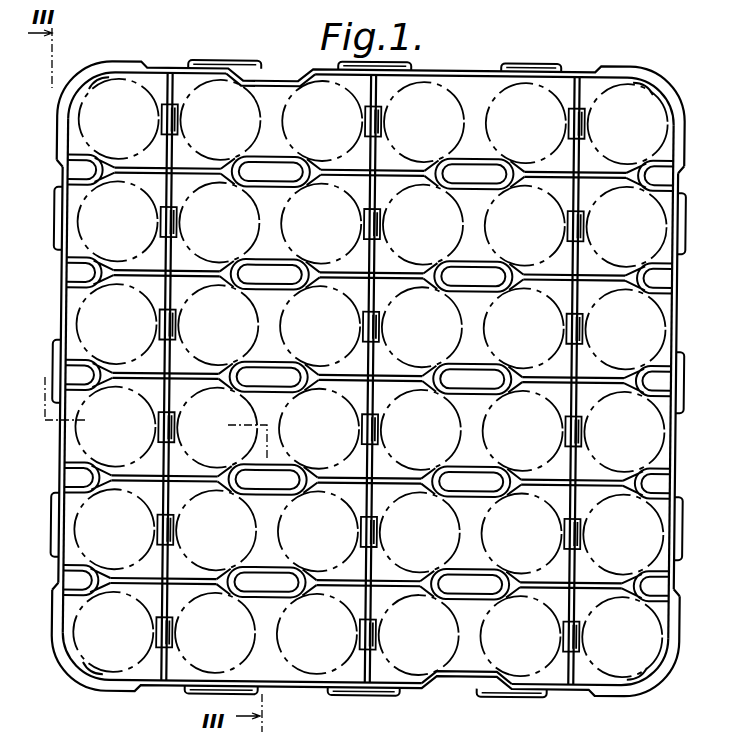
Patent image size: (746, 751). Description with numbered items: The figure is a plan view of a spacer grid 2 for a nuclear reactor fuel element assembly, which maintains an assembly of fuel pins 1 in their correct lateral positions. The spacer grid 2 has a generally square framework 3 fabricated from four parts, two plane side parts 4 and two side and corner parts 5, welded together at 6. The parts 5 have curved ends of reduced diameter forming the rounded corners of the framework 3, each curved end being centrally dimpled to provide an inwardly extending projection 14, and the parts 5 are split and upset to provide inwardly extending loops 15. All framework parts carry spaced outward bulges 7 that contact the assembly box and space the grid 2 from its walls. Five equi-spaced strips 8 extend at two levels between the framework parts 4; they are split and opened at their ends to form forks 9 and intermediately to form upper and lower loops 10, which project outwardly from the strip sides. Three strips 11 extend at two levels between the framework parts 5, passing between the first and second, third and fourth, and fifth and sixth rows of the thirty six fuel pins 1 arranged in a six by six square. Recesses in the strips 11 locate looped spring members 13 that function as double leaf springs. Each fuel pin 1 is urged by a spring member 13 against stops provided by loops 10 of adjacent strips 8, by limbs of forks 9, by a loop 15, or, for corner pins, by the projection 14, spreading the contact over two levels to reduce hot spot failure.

The fuel pin 1 is at (614, 80).
The spacer grid 2 is at (435, 66).
The framework 3 is at (676, 332).
The plane side part 4 is at (62, 446).
The side and corner part 5 is at (292, 62).
The weld 6 is at (61, 168).
The outward bulge 7 is at (196, 66).
The strip 8 is at (384, 180).
The fork 9 is at (62, 270).
The loop 10 is at (262, 270).
The strip 11 is at (176, 368).
The looped spring member 13 is at (386, 126).
The inwardly extending projection 14 is at (100, 82).
The inwardly extending loop 15 is at (262, 62).